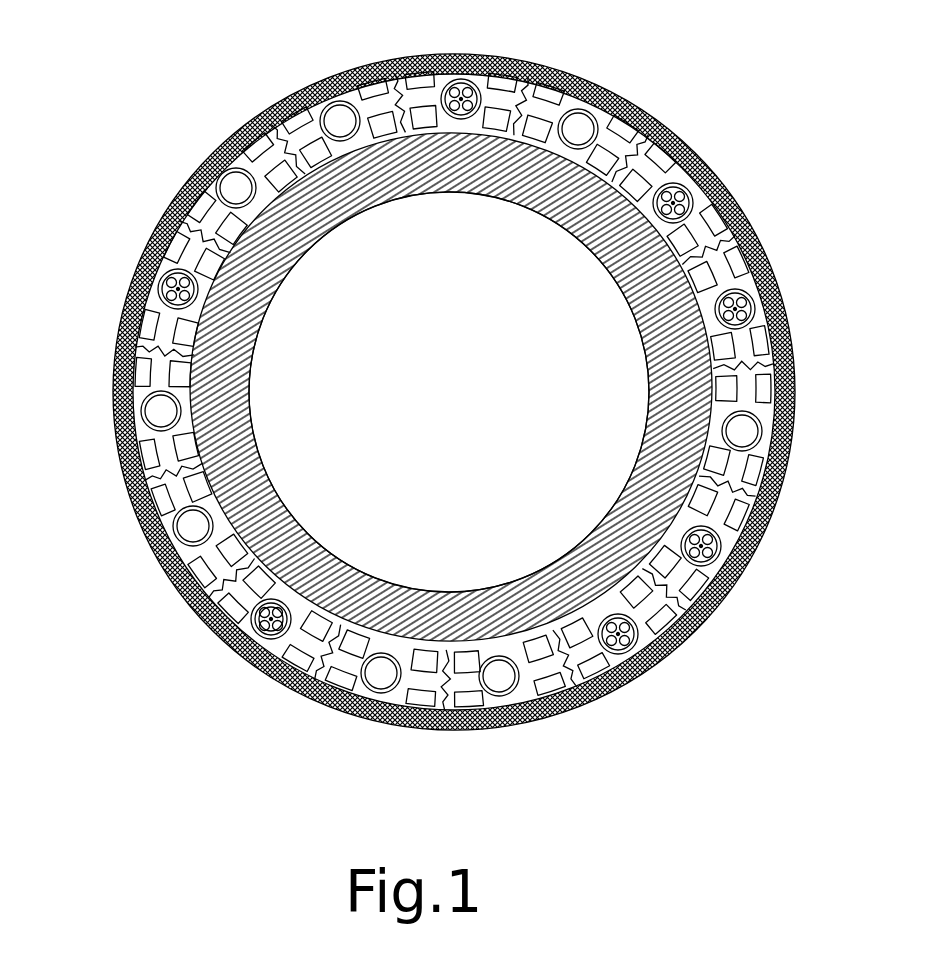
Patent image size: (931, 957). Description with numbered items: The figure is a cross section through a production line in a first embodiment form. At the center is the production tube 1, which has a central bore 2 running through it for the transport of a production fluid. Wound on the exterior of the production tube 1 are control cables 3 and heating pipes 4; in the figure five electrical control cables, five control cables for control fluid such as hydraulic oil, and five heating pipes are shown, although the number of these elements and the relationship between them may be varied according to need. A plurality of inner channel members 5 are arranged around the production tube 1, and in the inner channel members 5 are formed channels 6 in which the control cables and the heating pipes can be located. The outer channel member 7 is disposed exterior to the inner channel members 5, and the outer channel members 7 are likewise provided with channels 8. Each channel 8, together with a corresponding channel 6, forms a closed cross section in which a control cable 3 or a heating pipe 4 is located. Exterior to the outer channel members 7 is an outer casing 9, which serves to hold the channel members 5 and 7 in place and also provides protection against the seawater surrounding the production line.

The production tube 1 is at (403, 587).
The central bore 2 is at (470, 412).
The control cables 3 is at (358, 92).
The heating pipes 4 is at (592, 118).
The inner channel members 5 is at (337, 643).
The channels 6 is at (300, 590).
The outer channel member 7 is at (270, 677).
The channels 8 is at (250, 622).
The outer casing 9 is at (520, 735).